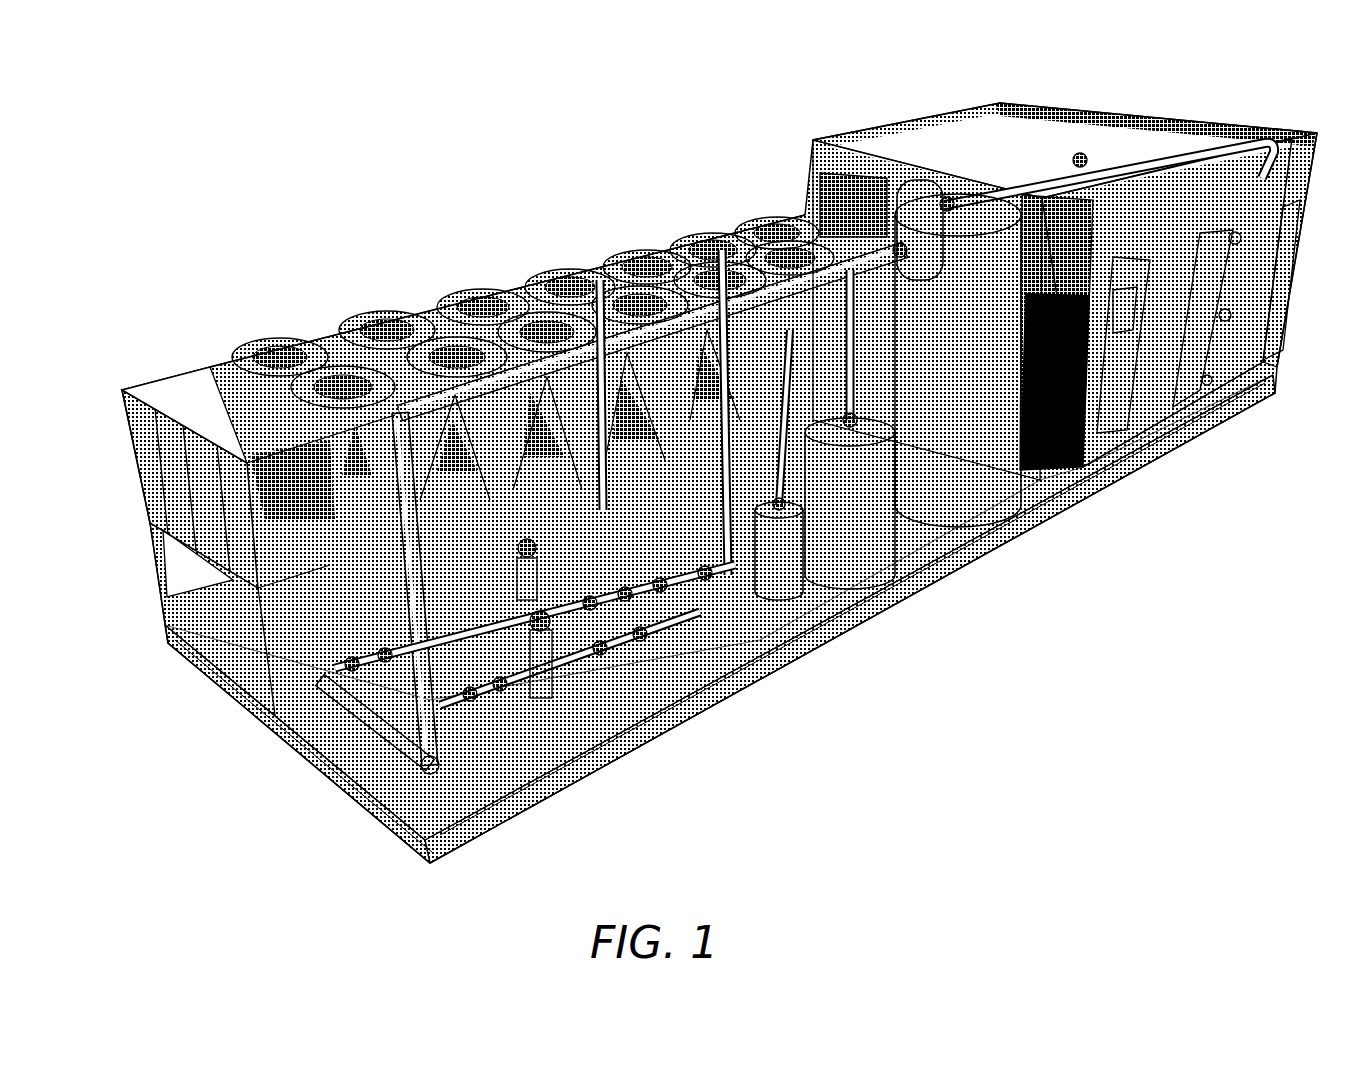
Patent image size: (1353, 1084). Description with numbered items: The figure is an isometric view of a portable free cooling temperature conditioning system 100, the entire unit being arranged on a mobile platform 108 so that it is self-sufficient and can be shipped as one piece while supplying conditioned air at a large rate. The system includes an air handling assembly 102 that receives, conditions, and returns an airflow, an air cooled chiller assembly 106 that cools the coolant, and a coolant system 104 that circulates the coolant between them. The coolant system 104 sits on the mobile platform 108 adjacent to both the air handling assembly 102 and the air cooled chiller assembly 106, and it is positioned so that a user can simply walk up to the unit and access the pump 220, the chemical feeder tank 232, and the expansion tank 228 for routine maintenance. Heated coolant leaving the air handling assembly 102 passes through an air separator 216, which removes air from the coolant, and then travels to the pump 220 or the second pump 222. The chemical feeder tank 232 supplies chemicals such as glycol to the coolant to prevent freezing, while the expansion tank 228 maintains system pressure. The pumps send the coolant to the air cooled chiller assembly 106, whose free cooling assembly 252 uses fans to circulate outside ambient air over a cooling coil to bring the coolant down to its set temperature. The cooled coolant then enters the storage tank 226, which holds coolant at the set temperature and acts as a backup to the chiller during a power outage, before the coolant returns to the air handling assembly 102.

The portable free cooling temperature conditioning system 100 is at (181, 125).
The air handling assembly 102 is at (1165, 96).
The coolant system 104 is at (962, 720).
The air cooled chiller assembly 106 is at (237, 243).
The mobile platform 108 is at (510, 824).
The air separator 216 is at (935, 192).
The pump 220 is at (557, 660).
The second pump 222 is at (543, 567).
The storage tank 226 is at (1000, 458).
The expansion tank 228 is at (880, 545).
The chemical feeder tank 232 is at (795, 585).
The free cooling assembly 252 is at (444, 266).